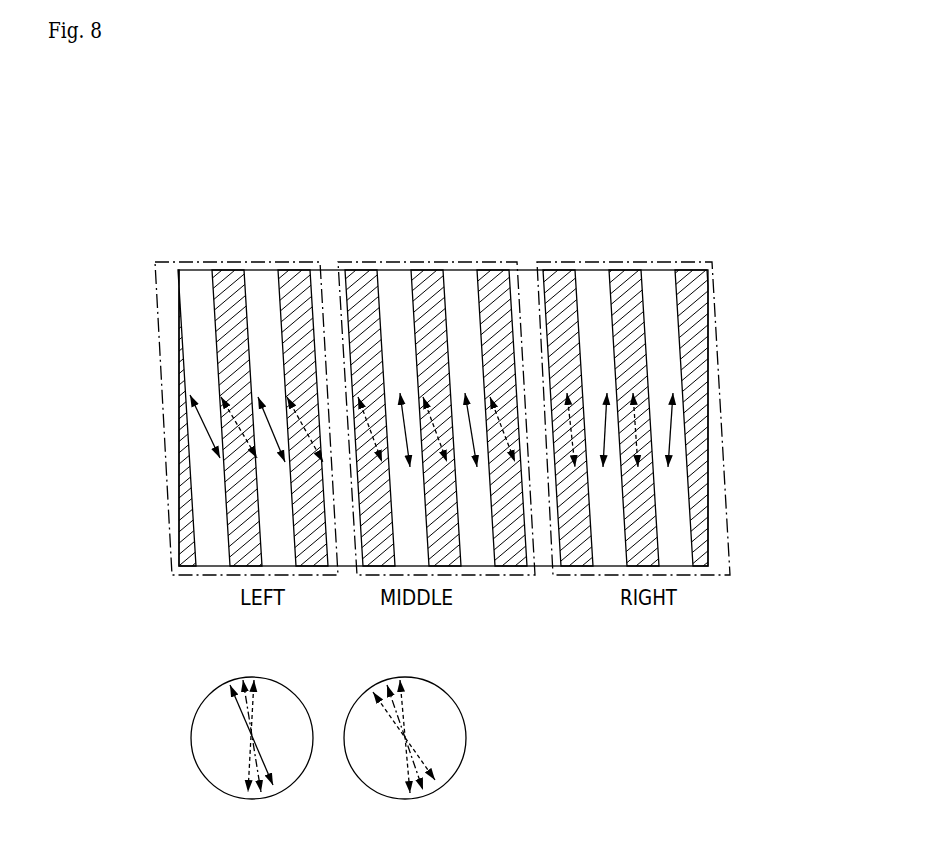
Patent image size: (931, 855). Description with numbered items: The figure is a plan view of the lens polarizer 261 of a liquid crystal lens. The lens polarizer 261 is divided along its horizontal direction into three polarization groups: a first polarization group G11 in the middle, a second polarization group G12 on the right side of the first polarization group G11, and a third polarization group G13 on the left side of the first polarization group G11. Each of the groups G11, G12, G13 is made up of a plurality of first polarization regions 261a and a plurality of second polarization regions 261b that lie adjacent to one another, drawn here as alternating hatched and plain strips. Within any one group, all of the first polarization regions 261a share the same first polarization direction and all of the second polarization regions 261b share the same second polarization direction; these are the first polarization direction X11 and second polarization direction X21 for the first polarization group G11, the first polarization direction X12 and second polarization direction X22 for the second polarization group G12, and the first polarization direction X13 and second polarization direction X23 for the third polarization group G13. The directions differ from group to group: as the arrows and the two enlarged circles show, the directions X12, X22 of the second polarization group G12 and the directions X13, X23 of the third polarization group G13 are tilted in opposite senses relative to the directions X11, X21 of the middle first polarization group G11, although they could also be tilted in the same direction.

The lens polarizer 261 is at (542, 182).
The first polarization region 261a is at (362, 280).
The second polarization region 261b is at (400, 277).
The first polarization group G11 is at (435, 261).
The second polarization group G12 is at (652, 261).
The third polarization group G13 is at (242, 261).
The first polarization direction of the first polarization group X11 is at (424, 452).
The first polarization direction of the second polarization group X12 is at (638, 443).
The first polarization direction of the third polarization group X13 is at (220, 455).
The second polarization direction of the first polarization group X21 is at (474, 432).
The second polarization direction of the second polarization group X22 is at (672, 422).
The second polarization direction of the third polarization group X23 is at (245, 443).